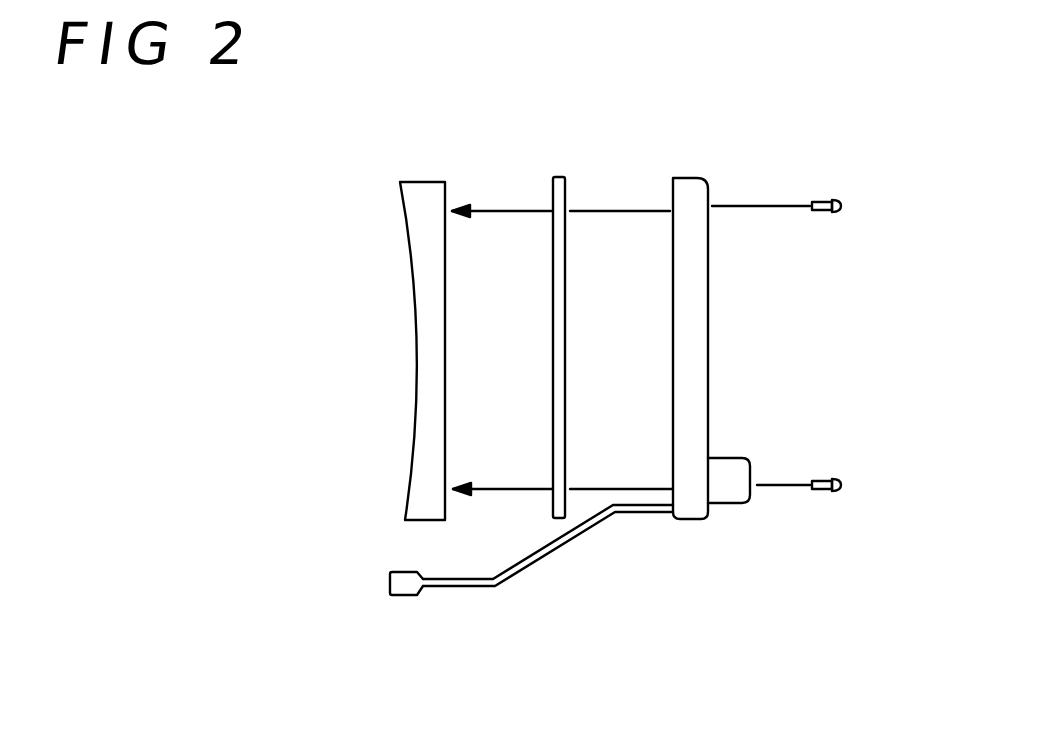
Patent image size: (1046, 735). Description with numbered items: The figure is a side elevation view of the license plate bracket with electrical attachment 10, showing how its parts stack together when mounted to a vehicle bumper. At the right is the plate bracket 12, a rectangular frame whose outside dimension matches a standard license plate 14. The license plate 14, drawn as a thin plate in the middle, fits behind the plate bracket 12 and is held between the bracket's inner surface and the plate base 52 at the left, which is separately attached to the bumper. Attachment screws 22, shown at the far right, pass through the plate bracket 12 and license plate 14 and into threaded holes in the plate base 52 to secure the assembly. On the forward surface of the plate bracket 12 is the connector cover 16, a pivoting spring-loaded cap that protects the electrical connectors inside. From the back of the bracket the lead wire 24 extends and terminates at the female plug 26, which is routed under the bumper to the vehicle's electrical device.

The license plate bracket with electrical attachment 10 is at (692, 155).
The plate bracket 12 is at (700, 200).
The license plate 14 is at (562, 175).
The connector cover 16 is at (753, 497).
The attachment screws 22 is at (827, 345).
The lead wire 24 is at (617, 523).
The female plug 26 is at (387, 572).
The plate base 52 is at (423, 180).